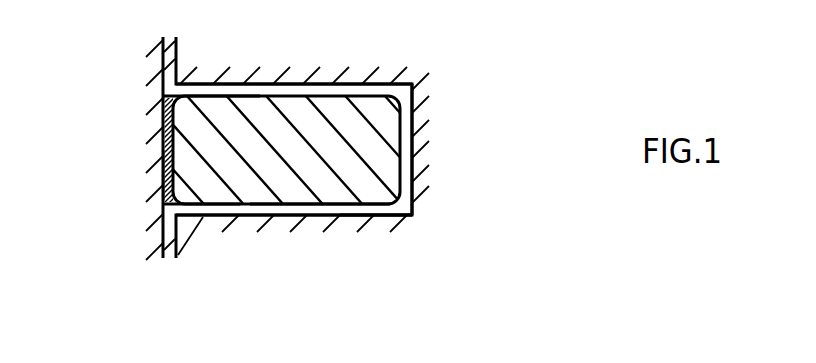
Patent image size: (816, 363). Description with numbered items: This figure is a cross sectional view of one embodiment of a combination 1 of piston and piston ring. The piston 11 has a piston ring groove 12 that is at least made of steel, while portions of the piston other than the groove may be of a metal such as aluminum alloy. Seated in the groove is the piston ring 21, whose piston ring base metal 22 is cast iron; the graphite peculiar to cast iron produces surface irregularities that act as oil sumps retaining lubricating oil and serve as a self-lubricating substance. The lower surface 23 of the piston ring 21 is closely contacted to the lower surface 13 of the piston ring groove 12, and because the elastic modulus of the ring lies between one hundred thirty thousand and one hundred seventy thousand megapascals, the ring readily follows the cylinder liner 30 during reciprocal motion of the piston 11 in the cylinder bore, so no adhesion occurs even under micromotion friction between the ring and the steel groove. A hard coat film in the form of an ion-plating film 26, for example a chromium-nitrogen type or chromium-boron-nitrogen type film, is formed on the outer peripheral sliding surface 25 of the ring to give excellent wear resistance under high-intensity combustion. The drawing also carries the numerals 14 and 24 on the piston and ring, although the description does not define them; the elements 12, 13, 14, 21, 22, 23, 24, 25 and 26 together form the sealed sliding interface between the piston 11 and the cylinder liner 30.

The combination of piston and piston ring 1 is at (450, 150).
The piston 11 is at (380, 76).
The piston ring groove 12 is at (383, 219).
The lower surface of the piston ring groove 13 is at (323, 215).
The top wall 14 is at (284, 84).
The piston ring 21 is at (218, 212).
The piston ring base metal 22 is at (283, 205).
The lower surface of the piston ring 23 is at (348, 205).
The upper gap 24 is at (220, 96).
The outer peripheral sliding surface 25 is at (162, 122).
The ion-plating film 26 is at (163, 185).
The cylinder liner 30 is at (158, 62).